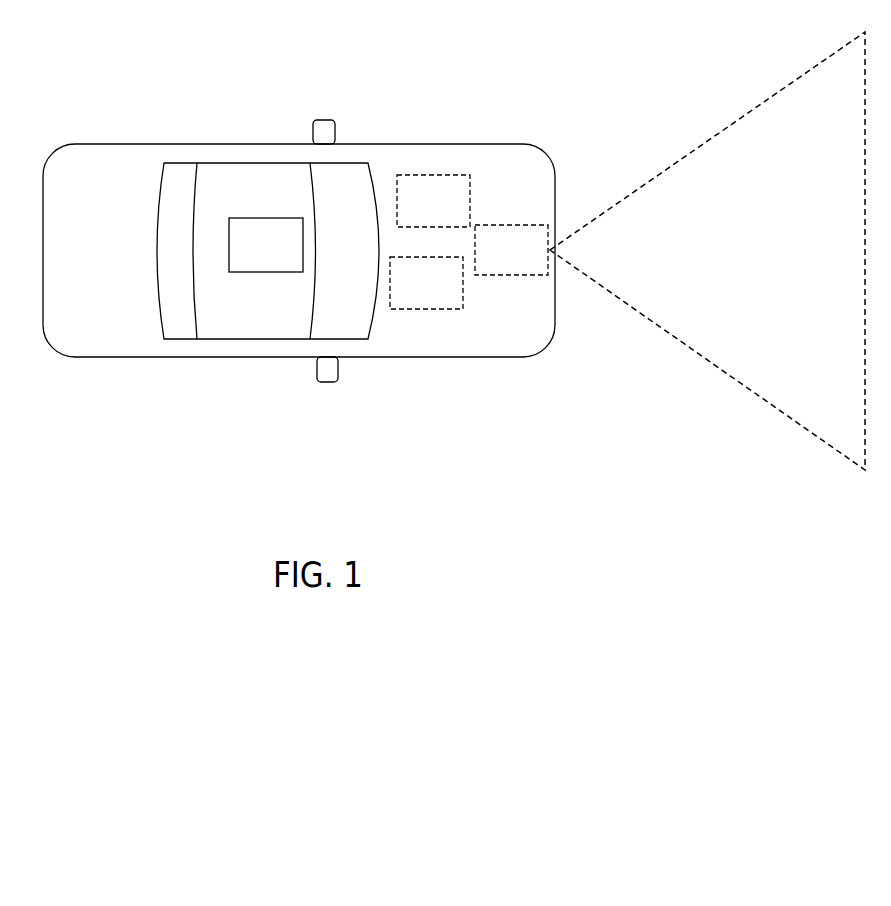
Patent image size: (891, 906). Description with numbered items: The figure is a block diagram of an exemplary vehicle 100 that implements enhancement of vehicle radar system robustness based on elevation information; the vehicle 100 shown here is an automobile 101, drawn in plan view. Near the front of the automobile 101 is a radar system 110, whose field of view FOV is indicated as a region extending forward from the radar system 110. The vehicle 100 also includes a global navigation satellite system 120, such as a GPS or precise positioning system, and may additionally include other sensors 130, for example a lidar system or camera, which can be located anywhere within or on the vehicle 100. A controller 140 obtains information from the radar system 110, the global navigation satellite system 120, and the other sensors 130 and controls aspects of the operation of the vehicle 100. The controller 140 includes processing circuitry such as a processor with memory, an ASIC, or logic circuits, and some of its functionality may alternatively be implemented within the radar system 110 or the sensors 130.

The vehicle 100 is at (299, 281).
The automobile 101 is at (120, 358).
The radar system 110 is at (536, 266).
The global navigation satellite system 120 is at (457, 216).
The other sensors 130 is at (290, 258).
The controller 140 is at (449, 298).
The field of view FOV is at (725, 127).